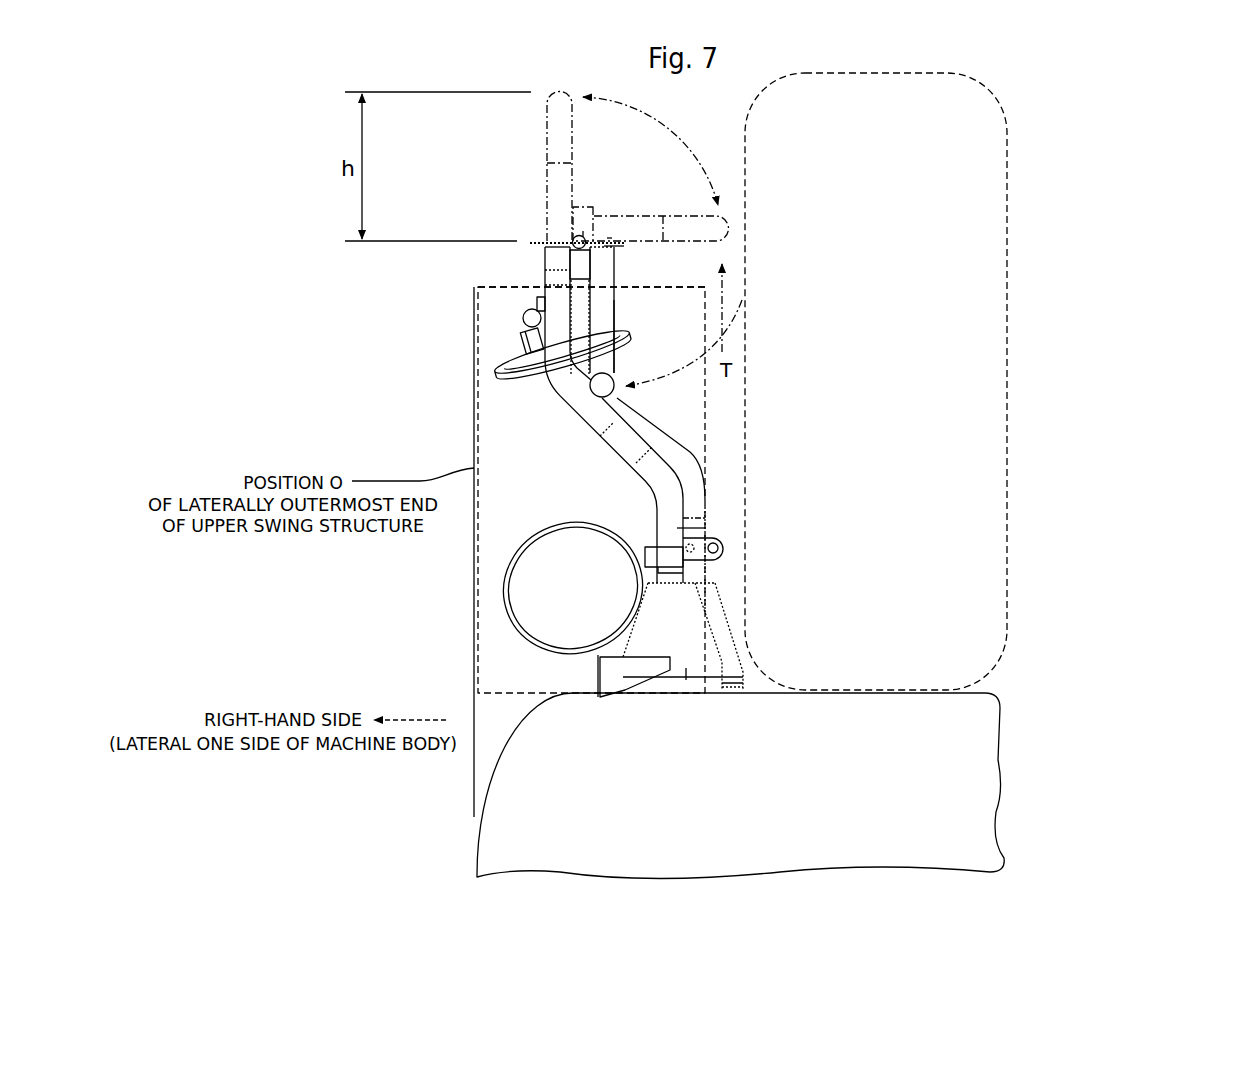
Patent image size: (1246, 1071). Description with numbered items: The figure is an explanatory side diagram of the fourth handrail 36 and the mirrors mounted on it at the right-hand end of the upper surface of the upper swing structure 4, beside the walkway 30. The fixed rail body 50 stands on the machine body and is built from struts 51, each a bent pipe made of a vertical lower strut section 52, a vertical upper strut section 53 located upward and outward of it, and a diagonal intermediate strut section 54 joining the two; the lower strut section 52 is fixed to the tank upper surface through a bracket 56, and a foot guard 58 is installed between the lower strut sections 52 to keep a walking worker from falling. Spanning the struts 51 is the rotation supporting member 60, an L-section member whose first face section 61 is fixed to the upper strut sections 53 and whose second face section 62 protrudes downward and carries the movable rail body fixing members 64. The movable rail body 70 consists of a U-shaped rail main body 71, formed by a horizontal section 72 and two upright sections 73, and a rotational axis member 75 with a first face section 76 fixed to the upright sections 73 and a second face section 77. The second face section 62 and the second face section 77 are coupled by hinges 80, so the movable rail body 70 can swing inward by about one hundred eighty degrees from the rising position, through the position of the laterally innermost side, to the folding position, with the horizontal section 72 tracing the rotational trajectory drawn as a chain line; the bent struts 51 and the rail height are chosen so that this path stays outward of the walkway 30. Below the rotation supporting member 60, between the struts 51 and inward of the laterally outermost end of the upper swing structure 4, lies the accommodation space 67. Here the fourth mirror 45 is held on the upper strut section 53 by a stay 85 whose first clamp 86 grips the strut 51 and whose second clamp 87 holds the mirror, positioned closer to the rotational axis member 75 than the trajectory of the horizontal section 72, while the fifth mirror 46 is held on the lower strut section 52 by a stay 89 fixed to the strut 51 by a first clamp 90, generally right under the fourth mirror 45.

The upper swing structure 4 is at (1018, 695).
The walkway 30 is at (1010, 402).
The fourth handrail 36 is at (372, 330).
The fourth mirror 45 is at (541, 379).
The fifth mirror 46 is at (557, 558).
The fixed rail body 50 is at (730, 607).
The strut 51 is at (587, 429).
The lower strut section 52 is at (700, 519).
The upper strut section 53 is at (542, 285).
The intermediate strut section 54 is at (650, 441).
The bracket 56 is at (690, 668).
The foot guard 58 is at (600, 678).
The rotation supporting member 60 is at (535, 245).
The first face section 61 is at (575, 237).
The second face section 62 is at (562, 260).
The movable rail body fixing member 64 is at (553, 278).
The accommodation space 67 is at (478, 578).
The movable rail body 70 is at (545, 126).
The rail main body 71 is at (619, 361).
The horizontal section 72 is at (618, 397).
The upright section 73 is at (608, 310).
The rotational axis member 75 is at (625, 250).
The first face section 76 is at (610, 240).
The second face section 77 is at (592, 263).
The hinge 80 is at (583, 236).
The stay 85 is at (523, 318).
The first clamp 86 is at (538, 305).
The second clamp 87 is at (524, 337).
The stay 89 is at (645, 553).
The first clamp 90 is at (718, 559).